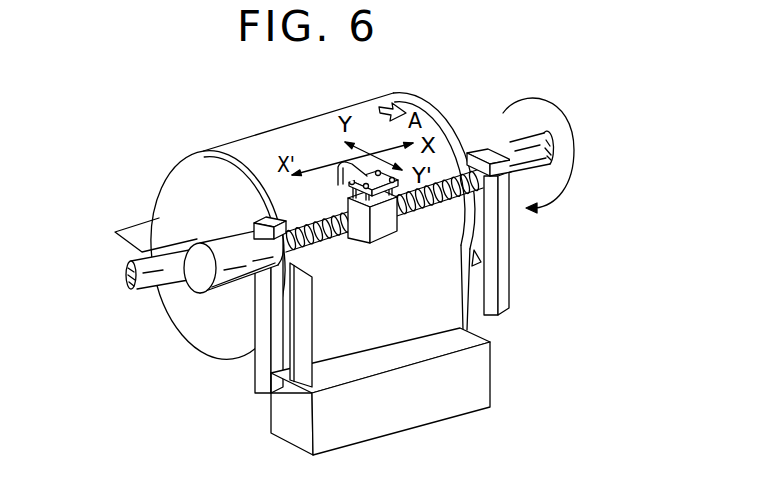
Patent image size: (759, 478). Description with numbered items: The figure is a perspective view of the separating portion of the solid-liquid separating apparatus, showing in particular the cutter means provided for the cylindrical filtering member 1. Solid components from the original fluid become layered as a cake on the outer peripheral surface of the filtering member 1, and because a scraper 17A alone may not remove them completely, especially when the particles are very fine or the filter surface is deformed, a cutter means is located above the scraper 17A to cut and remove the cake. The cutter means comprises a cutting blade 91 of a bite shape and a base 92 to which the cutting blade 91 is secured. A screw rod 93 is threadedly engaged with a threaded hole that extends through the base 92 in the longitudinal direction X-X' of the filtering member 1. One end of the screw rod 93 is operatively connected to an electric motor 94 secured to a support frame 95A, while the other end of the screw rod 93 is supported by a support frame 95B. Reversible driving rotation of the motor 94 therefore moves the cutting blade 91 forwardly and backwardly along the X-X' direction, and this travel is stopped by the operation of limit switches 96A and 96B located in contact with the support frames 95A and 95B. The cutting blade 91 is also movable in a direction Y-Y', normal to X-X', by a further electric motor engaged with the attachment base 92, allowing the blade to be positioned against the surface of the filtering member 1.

The cylindrical filtering member 1 is at (263, 137).
The scraper 17A is at (450, 283).
The cutting blade 91 is at (340, 163).
The base 92 is at (380, 243).
The screw rod 93 is at (460, 197).
The electric motor 94 is at (200, 243).
The support frame 95A is at (262, 356).
The support frame 95B is at (500, 318).
The limit switch 96A is at (211, 152).
The limit switch 96B is at (467, 160).